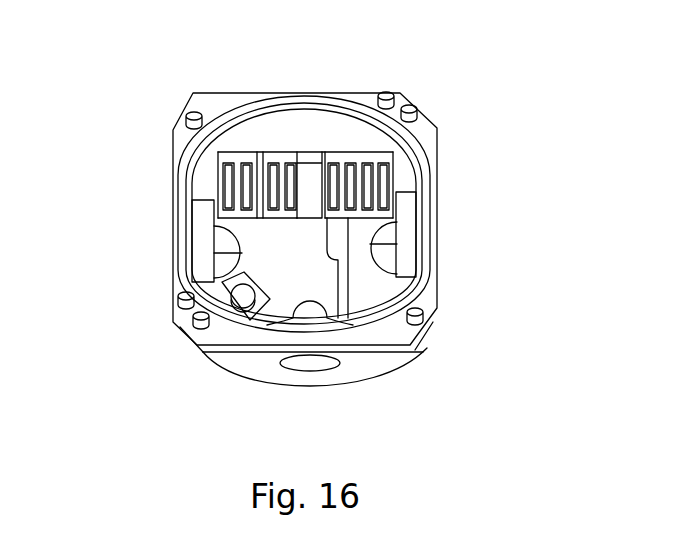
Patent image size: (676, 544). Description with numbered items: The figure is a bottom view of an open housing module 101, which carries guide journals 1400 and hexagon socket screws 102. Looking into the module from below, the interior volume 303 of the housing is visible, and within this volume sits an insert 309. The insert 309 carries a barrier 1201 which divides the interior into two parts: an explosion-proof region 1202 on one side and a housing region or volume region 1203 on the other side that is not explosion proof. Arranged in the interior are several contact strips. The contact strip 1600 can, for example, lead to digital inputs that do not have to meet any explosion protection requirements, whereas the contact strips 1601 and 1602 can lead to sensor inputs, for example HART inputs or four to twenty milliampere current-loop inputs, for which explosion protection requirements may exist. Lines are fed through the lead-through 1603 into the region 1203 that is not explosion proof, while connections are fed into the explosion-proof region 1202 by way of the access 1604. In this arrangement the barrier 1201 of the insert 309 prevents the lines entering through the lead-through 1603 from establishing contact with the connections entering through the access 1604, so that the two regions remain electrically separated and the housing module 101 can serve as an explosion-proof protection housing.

The housing module 101 is at (430, 151).
The hexagon socket screws 102 is at (423, 322).
The volume 303 is at (368, 305).
The insert 309 is at (307, 277).
The barrier 1201 is at (323, 150).
The explosion-proof region 1202 is at (250, 274).
The housing region 1203 is at (378, 284).
The guide journals 1400 is at (178, 324).
The contact strip 1600 is at (407, 136).
The contact strip 1601 is at (278, 152).
The contact strip 1602 is at (218, 166).
The lead-through 1603 is at (410, 208).
The access 1604 is at (207, 204).